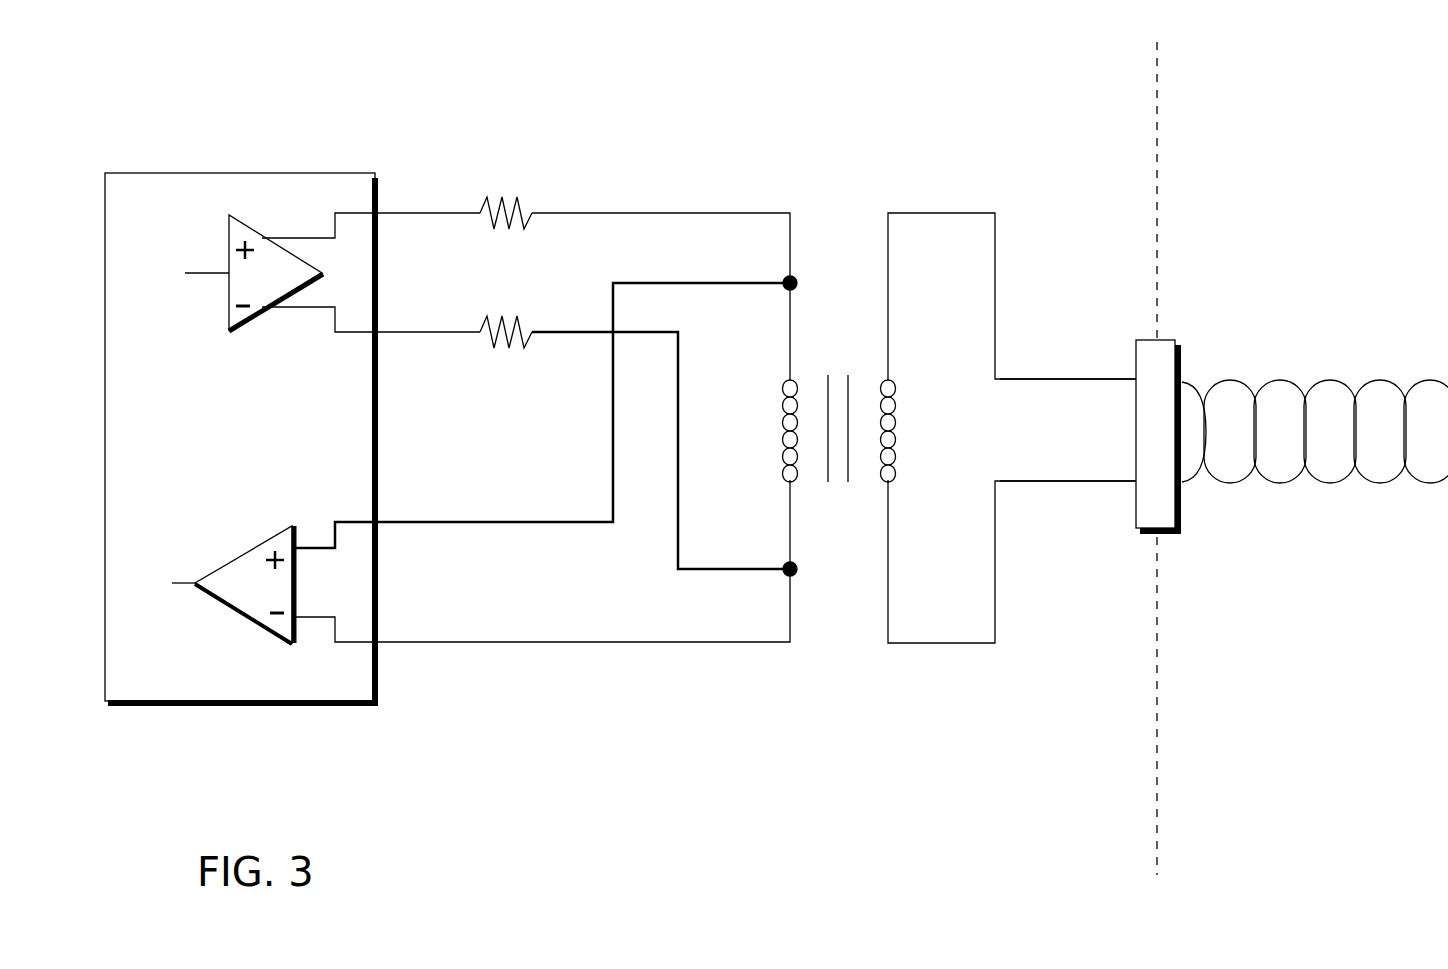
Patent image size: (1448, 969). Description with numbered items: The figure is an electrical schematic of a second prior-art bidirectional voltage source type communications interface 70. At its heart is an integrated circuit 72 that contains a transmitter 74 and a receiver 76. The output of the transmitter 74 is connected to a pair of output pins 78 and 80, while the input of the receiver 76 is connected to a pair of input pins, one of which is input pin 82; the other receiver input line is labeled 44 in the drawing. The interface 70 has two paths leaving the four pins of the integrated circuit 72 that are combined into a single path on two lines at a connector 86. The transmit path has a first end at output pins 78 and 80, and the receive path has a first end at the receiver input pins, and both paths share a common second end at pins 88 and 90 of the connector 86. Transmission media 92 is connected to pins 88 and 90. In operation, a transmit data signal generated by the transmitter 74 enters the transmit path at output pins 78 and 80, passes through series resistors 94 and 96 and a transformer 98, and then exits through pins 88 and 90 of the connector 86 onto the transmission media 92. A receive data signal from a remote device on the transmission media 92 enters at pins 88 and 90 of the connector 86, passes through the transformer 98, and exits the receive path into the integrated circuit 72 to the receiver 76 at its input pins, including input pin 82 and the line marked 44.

The bidirectional voltage source type communications interface 70 is at (1068, 88).
The integrated circuit 72 is at (245, 707).
The transmitter 74 is at (247, 222).
The receiver 76 is at (242, 552).
The output pin 78 is at (378, 218).
The output pin 80 is at (378, 332).
The input pin 82 is at (378, 528).
The receive input line 44 is at (378, 637).
The connector 86 is at (1134, 521).
The pin 88 is at (1134, 381).
The pin 90 is at (1134, 482).
The transmission media 92 is at (1330, 380).
The series resistor 94 is at (510, 193).
The series resistor 96 is at (510, 318).
The transformer 98 is at (843, 674).